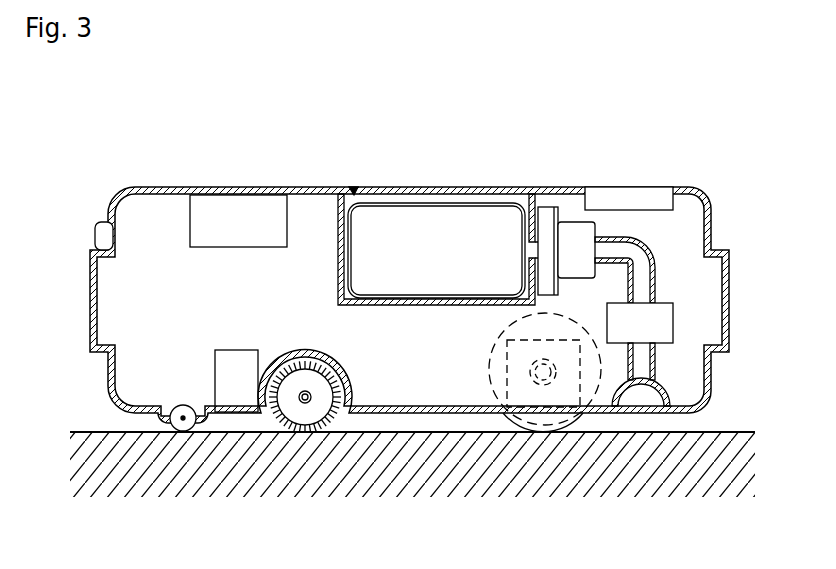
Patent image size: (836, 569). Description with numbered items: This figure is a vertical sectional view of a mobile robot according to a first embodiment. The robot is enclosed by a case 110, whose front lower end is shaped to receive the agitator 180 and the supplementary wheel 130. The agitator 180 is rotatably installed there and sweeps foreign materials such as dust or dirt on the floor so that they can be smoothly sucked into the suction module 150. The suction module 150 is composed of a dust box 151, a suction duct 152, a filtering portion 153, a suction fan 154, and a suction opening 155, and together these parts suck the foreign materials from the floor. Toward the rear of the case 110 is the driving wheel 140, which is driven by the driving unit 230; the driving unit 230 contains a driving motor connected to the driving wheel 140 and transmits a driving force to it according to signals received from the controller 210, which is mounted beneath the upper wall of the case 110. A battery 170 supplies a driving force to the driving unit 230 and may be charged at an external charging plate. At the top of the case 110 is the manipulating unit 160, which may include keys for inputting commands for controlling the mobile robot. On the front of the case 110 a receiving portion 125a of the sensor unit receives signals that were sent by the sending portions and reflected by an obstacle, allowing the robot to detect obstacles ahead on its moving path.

The case 110 is at (315, 188).
The receiving portion 125a is at (96, 230).
The supplementary wheel 130 is at (183, 431).
The driving wheel 140 is at (546, 424).
The suction module 150 is at (687, 118).
The dust box 151 is at (480, 203).
The suction duct 152 is at (620, 247).
The filtering portion 153 is at (573, 228).
The suction fan 154 is at (618, 310).
The suction opening 155 is at (662, 378).
The manipulating unit 160 is at (674, 199).
The battery 170 is at (241, 393).
The agitator 180 is at (305, 405).
The controller 210 is at (238, 200).
The driving unit 230 is at (522, 400).